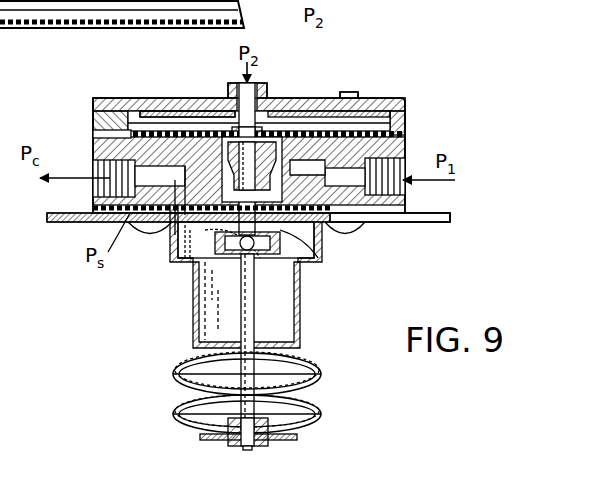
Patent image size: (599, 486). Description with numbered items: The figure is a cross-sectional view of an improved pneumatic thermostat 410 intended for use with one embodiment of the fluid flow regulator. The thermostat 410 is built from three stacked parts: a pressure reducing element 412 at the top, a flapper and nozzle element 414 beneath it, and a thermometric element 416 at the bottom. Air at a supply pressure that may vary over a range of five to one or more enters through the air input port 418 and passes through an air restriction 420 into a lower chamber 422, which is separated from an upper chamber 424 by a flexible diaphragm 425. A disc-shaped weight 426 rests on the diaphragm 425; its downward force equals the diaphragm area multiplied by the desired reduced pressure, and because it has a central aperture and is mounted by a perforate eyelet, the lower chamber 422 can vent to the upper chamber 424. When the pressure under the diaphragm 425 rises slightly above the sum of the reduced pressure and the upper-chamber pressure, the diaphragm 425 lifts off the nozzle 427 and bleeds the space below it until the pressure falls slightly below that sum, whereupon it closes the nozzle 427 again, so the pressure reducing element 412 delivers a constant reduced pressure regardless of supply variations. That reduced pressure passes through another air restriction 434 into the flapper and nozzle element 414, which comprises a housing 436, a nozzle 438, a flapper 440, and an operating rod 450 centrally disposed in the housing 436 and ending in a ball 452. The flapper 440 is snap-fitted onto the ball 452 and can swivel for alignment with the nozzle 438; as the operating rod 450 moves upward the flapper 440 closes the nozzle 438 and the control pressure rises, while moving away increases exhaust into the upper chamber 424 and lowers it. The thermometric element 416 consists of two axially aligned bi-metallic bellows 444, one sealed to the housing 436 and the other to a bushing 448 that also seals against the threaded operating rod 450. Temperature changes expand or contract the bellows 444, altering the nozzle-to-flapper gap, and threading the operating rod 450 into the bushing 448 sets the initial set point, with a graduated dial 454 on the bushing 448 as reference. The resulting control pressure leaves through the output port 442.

The pneumatic thermostat 410 is at (350, 88).
The pressure reducing element 412 is at (484, 98).
The flapper and nozzle element 414 is at (484, 222).
The thermometric element 416 is at (102, 346).
The air input port 418 is at (405, 186).
The air restriction 420 is at (386, 125).
The lower chamber 422 is at (134, 133).
The upper chamber 424 is at (183, 112).
The flexible diaphragm 425 is at (93, 135).
The disc-shaped weight 426 is at (302, 131).
The nozzle 427 is at (266, 178).
The air restriction 434 is at (186, 262).
The housing 436 is at (300, 320).
The nozzle 438 is at (300, 262).
The flapper 440 is at (286, 290).
The output port 442 is at (97, 190).
The bi-metallic bellows 444 is at (318, 375).
The bushing 448 is at (270, 440).
The operating rod 450 is at (240, 306).
The ball 452 is at (226, 250).
The graduated dial 454 is at (205, 440).